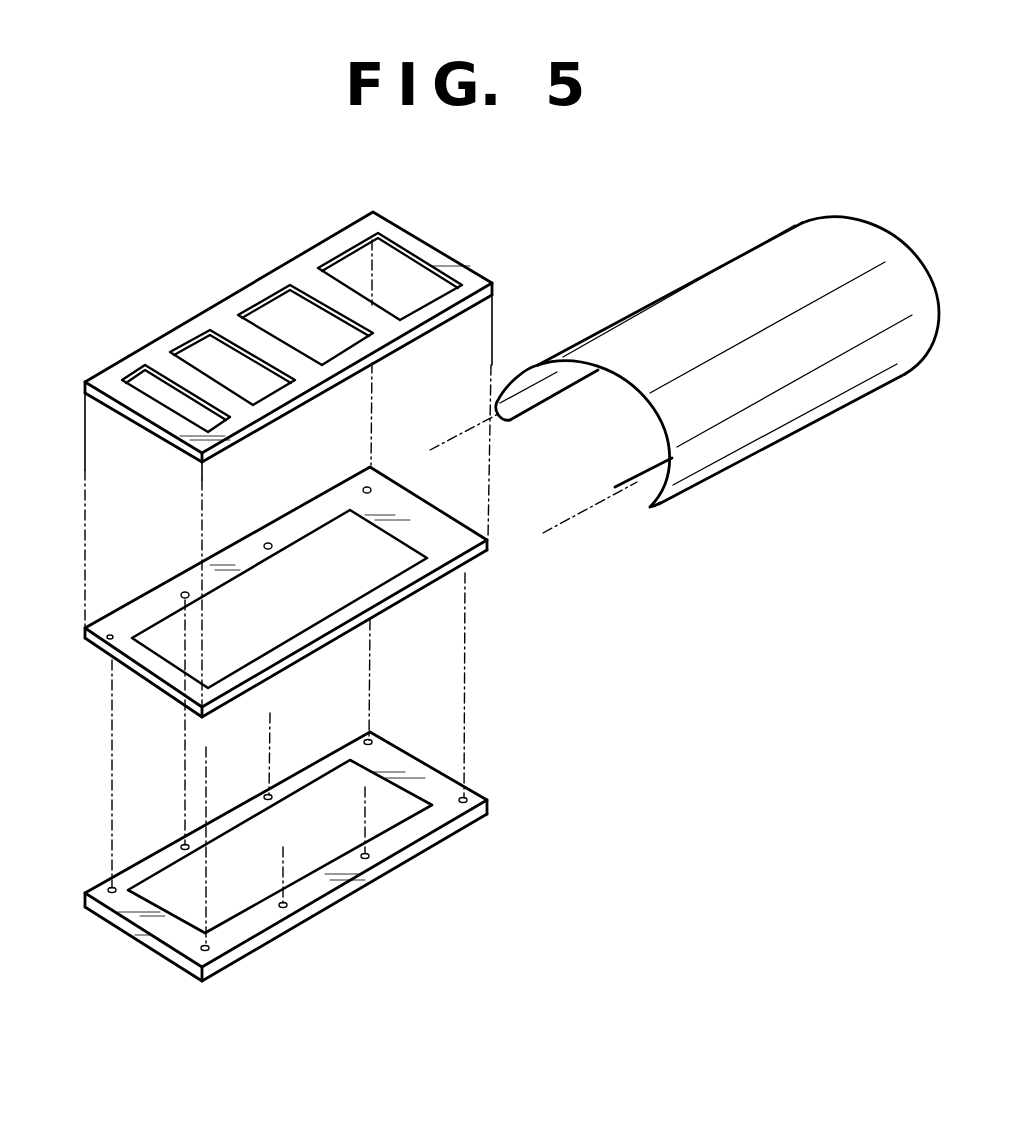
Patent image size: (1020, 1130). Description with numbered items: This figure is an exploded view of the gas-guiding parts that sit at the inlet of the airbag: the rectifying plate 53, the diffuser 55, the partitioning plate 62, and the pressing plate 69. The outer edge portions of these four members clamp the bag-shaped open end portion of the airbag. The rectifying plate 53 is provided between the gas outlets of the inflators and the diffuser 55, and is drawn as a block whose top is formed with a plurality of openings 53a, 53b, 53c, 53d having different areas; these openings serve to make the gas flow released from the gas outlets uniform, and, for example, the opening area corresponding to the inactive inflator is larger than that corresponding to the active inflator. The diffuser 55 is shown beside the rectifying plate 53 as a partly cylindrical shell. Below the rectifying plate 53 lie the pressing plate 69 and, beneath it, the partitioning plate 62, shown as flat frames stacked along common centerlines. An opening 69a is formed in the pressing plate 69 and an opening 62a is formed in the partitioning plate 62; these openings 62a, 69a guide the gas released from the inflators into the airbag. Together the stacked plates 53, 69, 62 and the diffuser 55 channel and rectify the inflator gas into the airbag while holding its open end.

The rectifying plate 53 is at (436, 245).
The opening 53a is at (145, 386).
The opening 53b is at (205, 357).
The opening 53c is at (272, 316).
The opening 53d is at (355, 270).
The diffuser 55 is at (792, 404).
The pressing plate 69 is at (286, 592).
The opening 69a is at (163, 640).
The partitioning plate 62 is at (286, 865).
The opening 62a is at (230, 913).